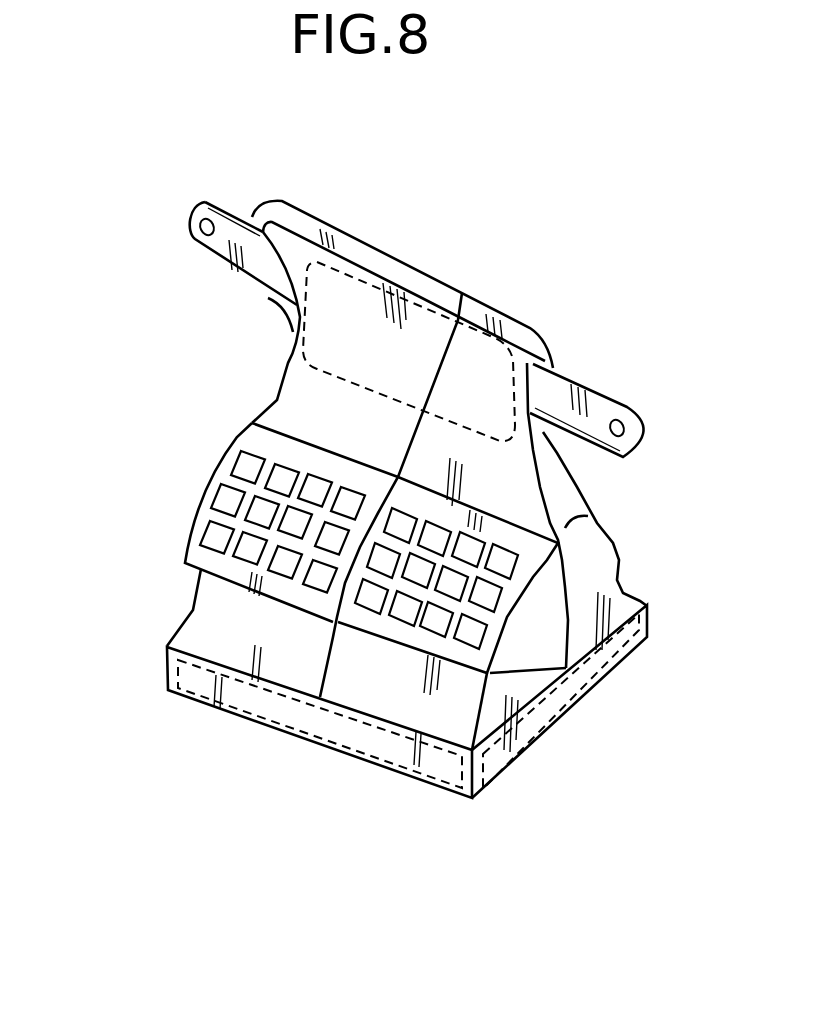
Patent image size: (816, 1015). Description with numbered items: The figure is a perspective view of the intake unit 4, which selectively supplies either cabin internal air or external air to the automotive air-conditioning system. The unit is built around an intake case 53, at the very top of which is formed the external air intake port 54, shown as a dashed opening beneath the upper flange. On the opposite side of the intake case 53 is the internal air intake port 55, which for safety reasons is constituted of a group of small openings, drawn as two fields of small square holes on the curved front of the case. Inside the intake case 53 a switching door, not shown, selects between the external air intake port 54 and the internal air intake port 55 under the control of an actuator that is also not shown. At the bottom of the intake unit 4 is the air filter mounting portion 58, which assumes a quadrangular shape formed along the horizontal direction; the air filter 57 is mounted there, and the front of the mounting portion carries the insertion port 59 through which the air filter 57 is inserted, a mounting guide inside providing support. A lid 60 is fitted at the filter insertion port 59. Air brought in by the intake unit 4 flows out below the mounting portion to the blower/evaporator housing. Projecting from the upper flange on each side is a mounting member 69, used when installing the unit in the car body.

The intake unit 4 is at (513, 213).
The intake case 53 is at (413, 710).
The external air intake port 54 is at (362, 295).
The internal air intake port 55 is at (216, 500).
The air filter 57 is at (507, 753).
The air filter mounting portion 58 is at (193, 717).
The insertion port 59 is at (293, 727).
The lid 60 is at (167, 672).
The mounting member 69 is at (211, 203).